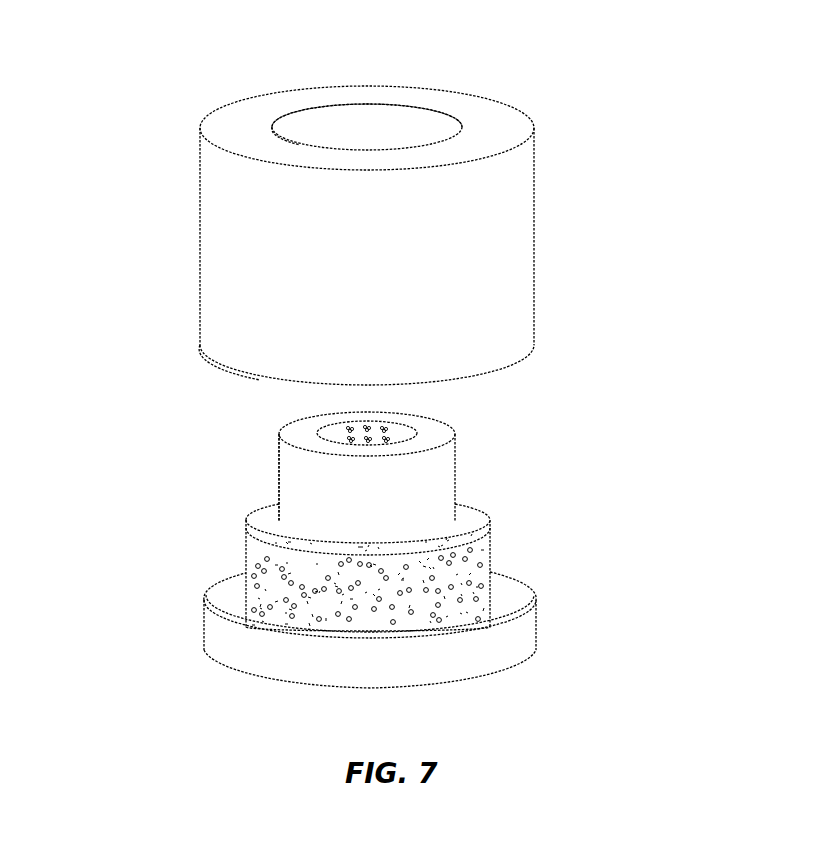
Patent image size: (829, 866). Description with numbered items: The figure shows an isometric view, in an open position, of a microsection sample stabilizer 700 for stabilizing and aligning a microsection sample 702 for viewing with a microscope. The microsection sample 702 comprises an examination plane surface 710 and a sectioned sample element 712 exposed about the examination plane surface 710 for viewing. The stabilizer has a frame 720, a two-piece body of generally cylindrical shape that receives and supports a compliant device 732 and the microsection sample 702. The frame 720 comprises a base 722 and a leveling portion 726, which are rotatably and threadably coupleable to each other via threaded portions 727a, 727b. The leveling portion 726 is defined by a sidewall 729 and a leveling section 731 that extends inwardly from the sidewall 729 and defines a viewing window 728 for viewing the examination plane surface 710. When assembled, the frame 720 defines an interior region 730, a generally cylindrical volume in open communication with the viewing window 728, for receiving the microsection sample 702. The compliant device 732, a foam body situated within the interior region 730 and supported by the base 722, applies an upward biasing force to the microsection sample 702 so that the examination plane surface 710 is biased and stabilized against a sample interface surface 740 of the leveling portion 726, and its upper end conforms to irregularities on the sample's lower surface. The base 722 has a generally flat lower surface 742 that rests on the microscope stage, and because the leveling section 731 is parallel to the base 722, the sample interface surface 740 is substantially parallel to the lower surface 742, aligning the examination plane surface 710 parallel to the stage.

The microsection sample stabilizer 700 is at (129, 80).
The microsection sample 702 is at (314, 497).
The examination plane surface 710 is at (364, 454).
The sectioned sample element 712 is at (314, 424).
The frame 720 is at (304, 225).
The base 722 is at (389, 655).
The leveling portion 726 is at (326, 197).
The threaded portion 727a is at (537, 594).
The threaded portion 727b is at (241, 376).
The viewing window 728 is at (347, 128).
The sidewall 729 is at (218, 232).
The interior region 730 is at (418, 120).
The leveling section 731 is at (451, 98).
The compliant device 732 is at (248, 536).
The sample interface surface 740 is at (298, 116).
The lower surface 742 is at (248, 677).